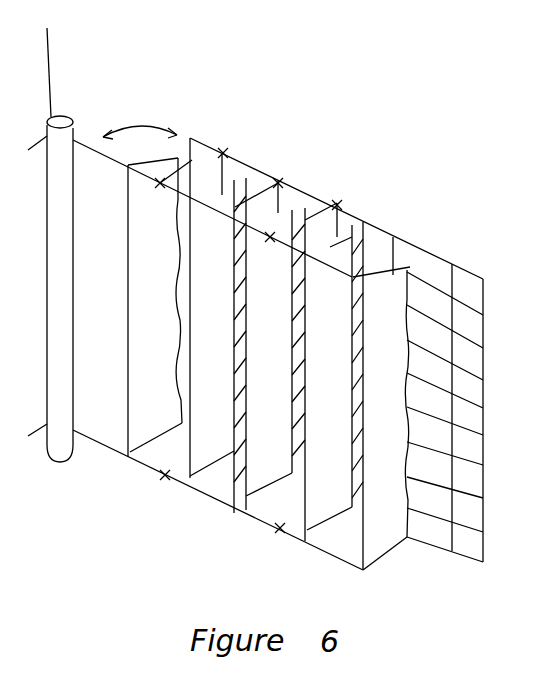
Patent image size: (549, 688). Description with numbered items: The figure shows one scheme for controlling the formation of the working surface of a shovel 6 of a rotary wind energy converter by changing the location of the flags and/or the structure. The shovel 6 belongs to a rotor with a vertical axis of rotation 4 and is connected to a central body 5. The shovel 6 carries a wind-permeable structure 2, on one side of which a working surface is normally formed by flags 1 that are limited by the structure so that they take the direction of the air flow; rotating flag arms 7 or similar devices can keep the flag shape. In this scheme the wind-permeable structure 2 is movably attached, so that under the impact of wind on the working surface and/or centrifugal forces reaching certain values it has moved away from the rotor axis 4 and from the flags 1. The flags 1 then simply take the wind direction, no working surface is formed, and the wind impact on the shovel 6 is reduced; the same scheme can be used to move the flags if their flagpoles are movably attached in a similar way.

The flag 1 is at (385, 523).
The wind-permeable structure 2 is at (383, 230).
The vertical axis of rotation 4 is at (60, 114).
The central body 5 is at (75, 121).
The shovel 6 is at (137, 470).
The rotating flag arm 7 is at (375, 292).